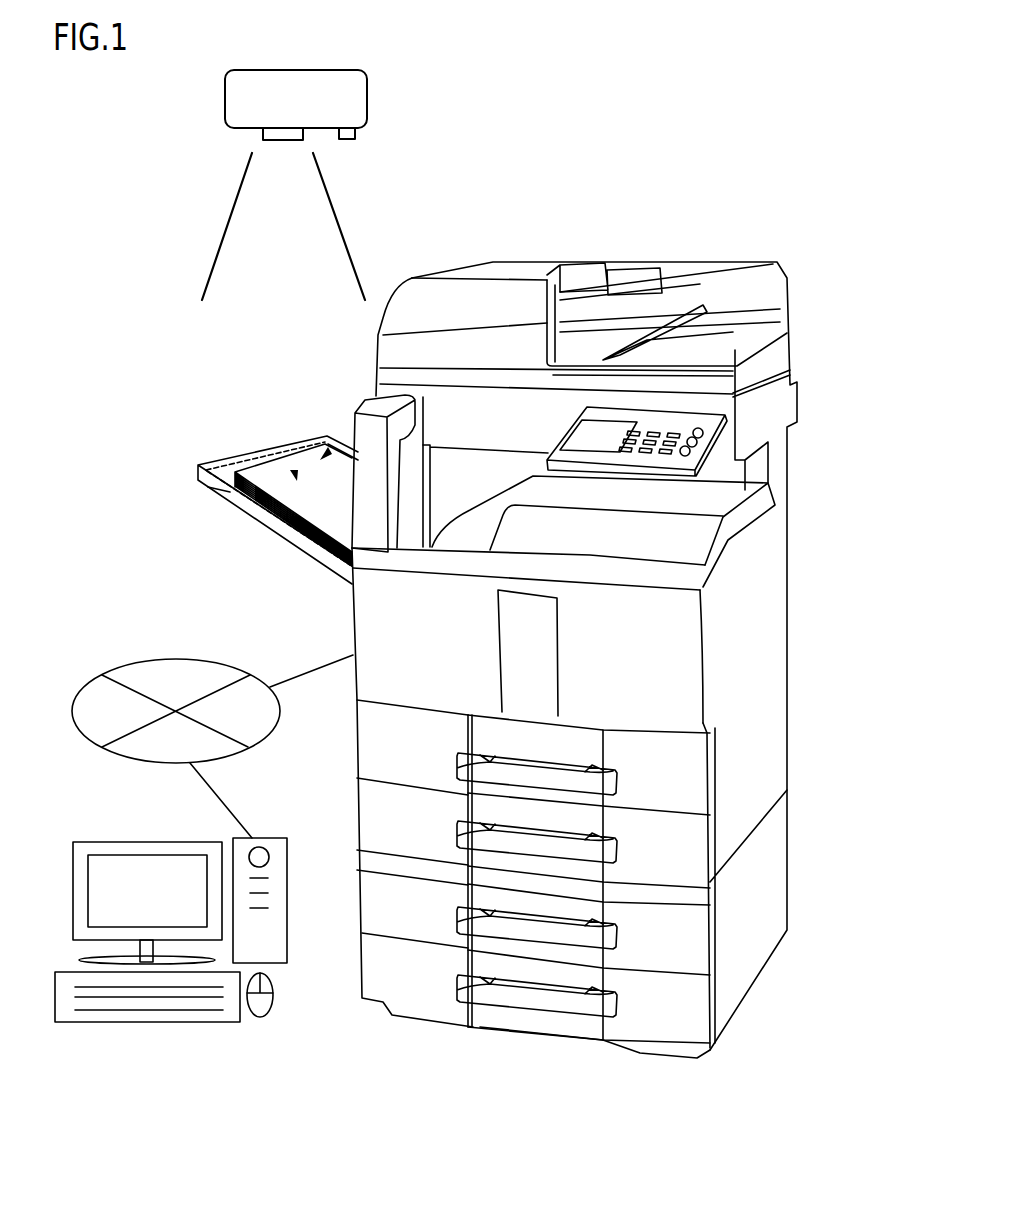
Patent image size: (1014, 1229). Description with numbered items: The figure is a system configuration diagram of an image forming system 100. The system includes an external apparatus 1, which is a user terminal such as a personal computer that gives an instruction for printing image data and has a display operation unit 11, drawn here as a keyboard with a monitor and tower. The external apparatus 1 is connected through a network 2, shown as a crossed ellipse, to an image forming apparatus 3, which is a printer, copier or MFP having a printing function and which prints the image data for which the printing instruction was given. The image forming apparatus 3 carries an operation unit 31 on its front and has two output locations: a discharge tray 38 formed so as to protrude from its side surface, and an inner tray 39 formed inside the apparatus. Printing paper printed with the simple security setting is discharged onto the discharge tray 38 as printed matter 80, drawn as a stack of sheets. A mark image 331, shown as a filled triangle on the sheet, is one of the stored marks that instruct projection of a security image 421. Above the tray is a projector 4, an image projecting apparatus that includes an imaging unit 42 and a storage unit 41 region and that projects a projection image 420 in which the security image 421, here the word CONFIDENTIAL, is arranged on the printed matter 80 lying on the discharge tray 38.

The image forming system 100 is at (656, 101).
The external apparatus 1 is at (174, 934).
The display operation unit 11 is at (167, 1017).
The network 2 is at (155, 657).
The image forming apparatus 3 is at (560, 257).
The operation unit 31 is at (700, 421).
The mark image 331 is at (326, 451).
The discharge tray 38 is at (262, 448).
The inner tray 39 is at (730, 490).
The projector 4 is at (315, 70).
The imaging unit 41 is at (356, 132).
The storage unit 42 is at (263, 138).
The printed matter 80 is at (266, 495).
The projection image 420 is at (228, 490).
The security image 421 is at (294, 474).